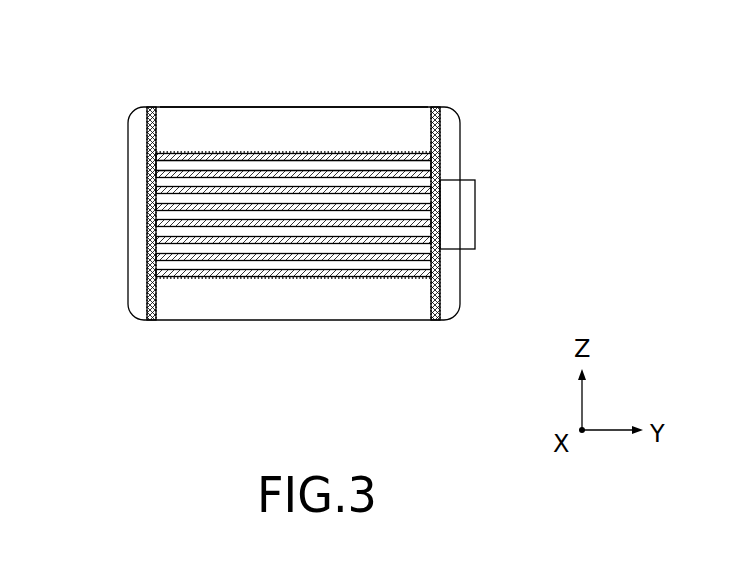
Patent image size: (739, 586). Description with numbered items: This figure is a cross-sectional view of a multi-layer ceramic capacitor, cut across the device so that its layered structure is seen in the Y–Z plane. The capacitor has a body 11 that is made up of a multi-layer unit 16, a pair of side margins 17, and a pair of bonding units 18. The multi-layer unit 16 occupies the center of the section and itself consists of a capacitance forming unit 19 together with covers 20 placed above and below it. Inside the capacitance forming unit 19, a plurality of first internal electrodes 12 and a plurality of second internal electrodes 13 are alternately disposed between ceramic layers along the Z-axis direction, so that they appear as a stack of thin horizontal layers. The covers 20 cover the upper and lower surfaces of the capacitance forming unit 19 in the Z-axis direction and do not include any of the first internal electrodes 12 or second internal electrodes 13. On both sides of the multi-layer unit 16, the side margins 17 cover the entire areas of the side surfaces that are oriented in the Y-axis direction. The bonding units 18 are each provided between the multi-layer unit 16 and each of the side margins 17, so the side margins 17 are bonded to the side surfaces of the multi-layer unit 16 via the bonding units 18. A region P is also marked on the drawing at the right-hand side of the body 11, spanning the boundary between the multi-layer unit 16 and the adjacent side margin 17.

The body 11 is at (431, 80).
The first internal electrode 12 is at (193, 253).
The second internal electrode 13 is at (337, 270).
The multi-layer unit 16 is at (298, 99).
The side margin 17 is at (136, 163).
The bonding unit 18 is at (152, 321).
The capacitance forming unit 19 is at (308, 226).
The cover 20 is at (308, 145).
The region P is at (475, 205).